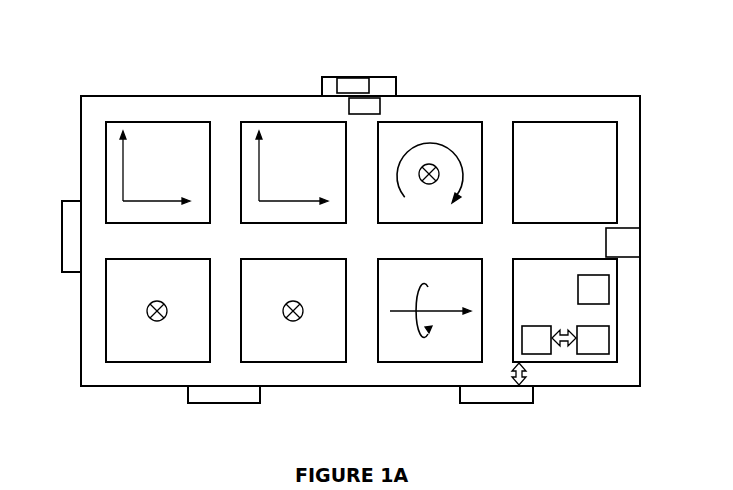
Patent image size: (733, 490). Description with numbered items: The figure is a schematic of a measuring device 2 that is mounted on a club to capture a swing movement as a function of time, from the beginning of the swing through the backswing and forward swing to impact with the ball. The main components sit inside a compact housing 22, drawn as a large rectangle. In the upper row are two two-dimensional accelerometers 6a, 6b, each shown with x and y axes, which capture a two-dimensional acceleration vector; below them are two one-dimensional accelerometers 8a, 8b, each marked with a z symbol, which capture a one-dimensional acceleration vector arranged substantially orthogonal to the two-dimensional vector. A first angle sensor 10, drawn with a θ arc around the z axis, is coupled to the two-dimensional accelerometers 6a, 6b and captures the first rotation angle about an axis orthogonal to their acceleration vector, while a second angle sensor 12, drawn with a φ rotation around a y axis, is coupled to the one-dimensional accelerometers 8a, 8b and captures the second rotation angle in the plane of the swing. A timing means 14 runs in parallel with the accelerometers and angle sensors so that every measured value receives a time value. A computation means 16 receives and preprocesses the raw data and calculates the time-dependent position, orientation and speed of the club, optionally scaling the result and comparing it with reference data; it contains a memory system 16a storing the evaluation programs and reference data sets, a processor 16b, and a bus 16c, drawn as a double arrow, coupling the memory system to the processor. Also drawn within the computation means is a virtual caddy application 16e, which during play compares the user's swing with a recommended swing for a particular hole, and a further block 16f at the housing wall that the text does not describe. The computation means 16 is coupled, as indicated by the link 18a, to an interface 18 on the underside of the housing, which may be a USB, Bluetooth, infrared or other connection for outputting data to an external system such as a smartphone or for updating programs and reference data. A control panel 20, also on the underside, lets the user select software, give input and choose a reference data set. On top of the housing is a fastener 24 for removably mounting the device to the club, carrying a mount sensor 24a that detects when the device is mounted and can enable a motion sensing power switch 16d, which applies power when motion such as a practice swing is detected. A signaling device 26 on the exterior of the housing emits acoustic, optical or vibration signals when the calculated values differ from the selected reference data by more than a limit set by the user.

The measuring device 2 is at (106, 67).
The two-dimensional accelerometer 6a is at (157, 122).
The two-dimensional accelerometer 6b is at (280, 122).
The one-dimensional accelerometer 8a is at (157, 362).
The one-dimensional accelerometer 8b is at (317, 362).
The first angle sensor 10 is at (448, 122).
The second angle sensor 12 is at (430, 362).
The timing means 14 is at (565, 172).
The computation means 16 is at (565, 310).
The memory system 16a is at (537, 340).
The processor 16b is at (593, 340).
The bus 16c is at (567, 348).
The motion sensing power switch 16d is at (374, 110).
The virtual caddy application 16e is at (593, 303).
The side interface module 16f is at (632, 238).
The interface 18 is at (493, 403).
The connection link 18a is at (519, 387).
The control panel 20 is at (230, 405).
The housing 22 is at (81, 350).
The fastener 24 is at (373, 77).
The mount sensor 24a is at (345, 77).
The signaling device 26 is at (62, 245).